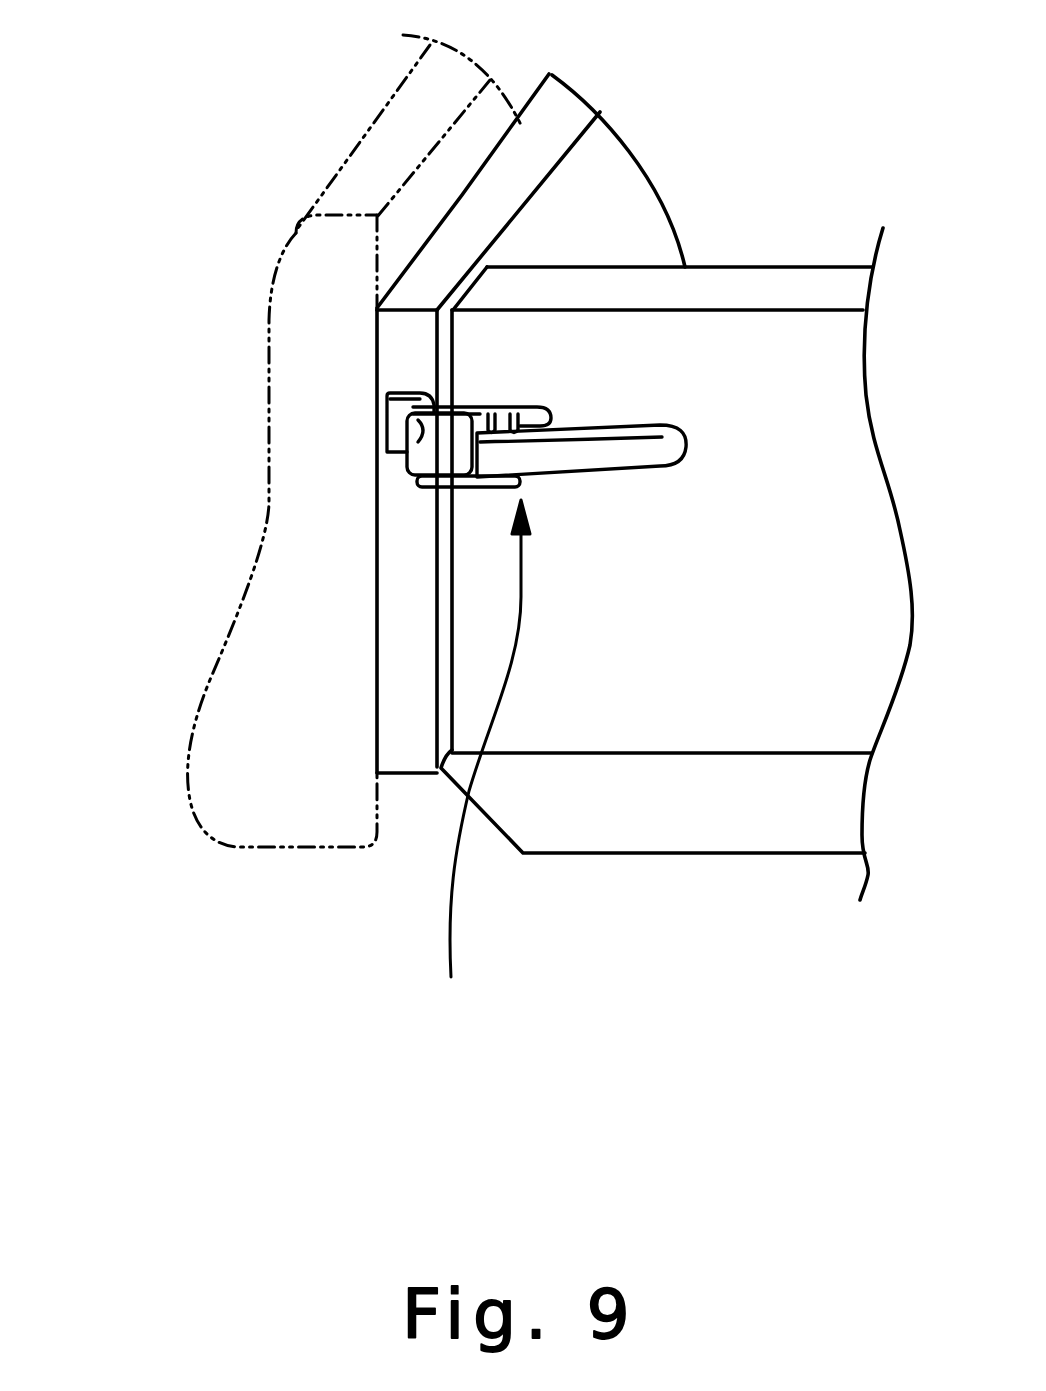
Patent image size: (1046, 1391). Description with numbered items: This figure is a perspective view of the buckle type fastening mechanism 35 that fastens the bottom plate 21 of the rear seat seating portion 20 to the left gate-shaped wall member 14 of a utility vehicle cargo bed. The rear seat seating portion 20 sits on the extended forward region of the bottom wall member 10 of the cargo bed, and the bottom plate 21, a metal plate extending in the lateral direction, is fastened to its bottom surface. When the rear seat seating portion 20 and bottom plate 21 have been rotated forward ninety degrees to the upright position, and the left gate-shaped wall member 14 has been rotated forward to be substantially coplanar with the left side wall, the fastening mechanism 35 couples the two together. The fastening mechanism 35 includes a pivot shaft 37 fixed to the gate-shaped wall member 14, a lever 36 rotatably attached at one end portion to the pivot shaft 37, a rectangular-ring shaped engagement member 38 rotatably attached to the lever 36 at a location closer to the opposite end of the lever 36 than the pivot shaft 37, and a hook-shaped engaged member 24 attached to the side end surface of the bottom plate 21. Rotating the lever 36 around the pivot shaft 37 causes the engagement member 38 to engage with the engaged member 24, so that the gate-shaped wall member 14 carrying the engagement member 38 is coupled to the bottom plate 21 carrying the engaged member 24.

The bottom wall member 10 is at (668, 835).
The left gate-shaped wall member 14 is at (797, 277).
The rear seat seating portion 20 is at (322, 180).
The bottom plate 21 is at (400, 636).
The engaged member 24 is at (422, 445).
The fastening mechanism 35 is at (479, 767).
The lever 36 is at (613, 425).
The pivot shaft 37 is at (470, 398).
The engagement member 38 is at (515, 402).